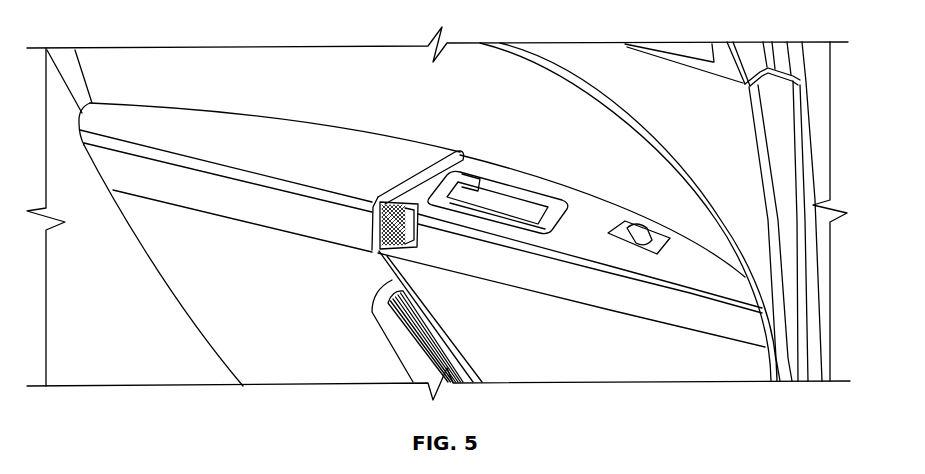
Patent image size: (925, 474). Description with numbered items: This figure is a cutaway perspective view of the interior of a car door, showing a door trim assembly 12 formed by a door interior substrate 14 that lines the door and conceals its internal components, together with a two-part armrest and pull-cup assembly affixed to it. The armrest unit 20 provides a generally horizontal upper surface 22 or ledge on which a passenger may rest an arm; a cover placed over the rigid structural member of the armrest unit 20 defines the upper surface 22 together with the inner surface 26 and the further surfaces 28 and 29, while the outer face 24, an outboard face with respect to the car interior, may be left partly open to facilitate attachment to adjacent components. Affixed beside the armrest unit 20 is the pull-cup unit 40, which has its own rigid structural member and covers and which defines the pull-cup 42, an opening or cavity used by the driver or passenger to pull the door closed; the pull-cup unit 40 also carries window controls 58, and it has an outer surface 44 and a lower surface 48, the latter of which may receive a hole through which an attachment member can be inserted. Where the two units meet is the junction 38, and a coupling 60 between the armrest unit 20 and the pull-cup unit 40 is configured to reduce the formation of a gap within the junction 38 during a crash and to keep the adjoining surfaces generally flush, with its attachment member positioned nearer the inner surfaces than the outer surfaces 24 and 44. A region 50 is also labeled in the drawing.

The door trim assembly 12 is at (200, 310).
The door interior substrate 14 is at (399, 107).
The armrest unit 20 is at (243, 207).
The upper surface 22 is at (262, 135).
The outer face 24 is at (355, 145).
The inner surface 26 is at (197, 185).
The surface of armrest unit 28 is at (297, 241).
The surface of armrest unit 29 is at (88, 160).
The junction 38 is at (447, 161).
The pull-cup unit 40 is at (603, 288).
The pull-cup 42 is at (499, 198).
The outer surface 44 is at (583, 213).
The lower surface 48 is at (672, 328).
The switch 50 is at (610, 215).
The window controls 58 is at (645, 233).
The coupling 60 is at (380, 243).